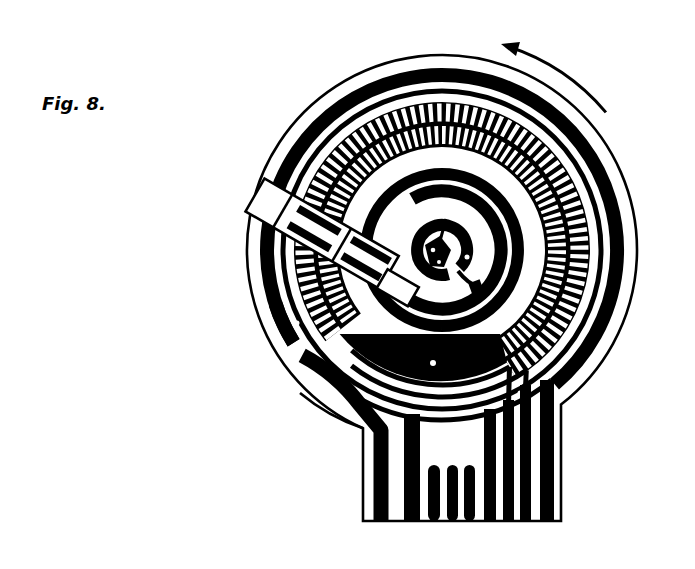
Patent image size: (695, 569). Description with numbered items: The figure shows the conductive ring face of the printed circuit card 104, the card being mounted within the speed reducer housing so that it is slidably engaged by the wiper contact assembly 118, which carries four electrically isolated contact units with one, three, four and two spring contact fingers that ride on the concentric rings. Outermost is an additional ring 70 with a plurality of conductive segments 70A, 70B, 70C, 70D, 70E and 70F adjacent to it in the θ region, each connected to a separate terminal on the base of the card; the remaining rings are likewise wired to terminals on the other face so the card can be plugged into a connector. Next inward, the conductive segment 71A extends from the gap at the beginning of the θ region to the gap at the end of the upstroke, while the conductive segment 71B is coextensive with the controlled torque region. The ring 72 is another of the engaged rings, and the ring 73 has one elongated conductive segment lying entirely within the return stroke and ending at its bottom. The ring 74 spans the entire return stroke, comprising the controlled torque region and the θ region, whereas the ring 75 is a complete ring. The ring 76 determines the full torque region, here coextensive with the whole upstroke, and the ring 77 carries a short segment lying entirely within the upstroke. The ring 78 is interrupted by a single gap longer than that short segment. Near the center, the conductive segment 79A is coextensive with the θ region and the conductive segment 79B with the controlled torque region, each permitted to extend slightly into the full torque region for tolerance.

The ring 70 is at (609, 346).
The conductive segment 70A is at (550, 523).
The conductive segment 70B is at (528, 523).
The conductive segment 70C is at (508, 524).
The conductive segment 70D is at (477, 518).
The conductive segment 70E is at (418, 527).
The conductive segment 70F is at (380, 523).
The conductive segment 71A is at (272, 306).
The conductive segment 71B is at (600, 331).
The ring 72 is at (595, 301).
The ring 73 is at (591, 261).
The ring 74 is at (384, 168).
The ring 75 is at (469, 178).
The ring 76 is at (496, 233).
The ring 77 is at (468, 258).
The ring 78 is at (430, 222).
The conductive segment 79A is at (411, 283).
The conductive segment 79B is at (445, 206).
The printed circuit card 104 is at (302, 398).
The wiper contact assembly 118 is at (254, 199).